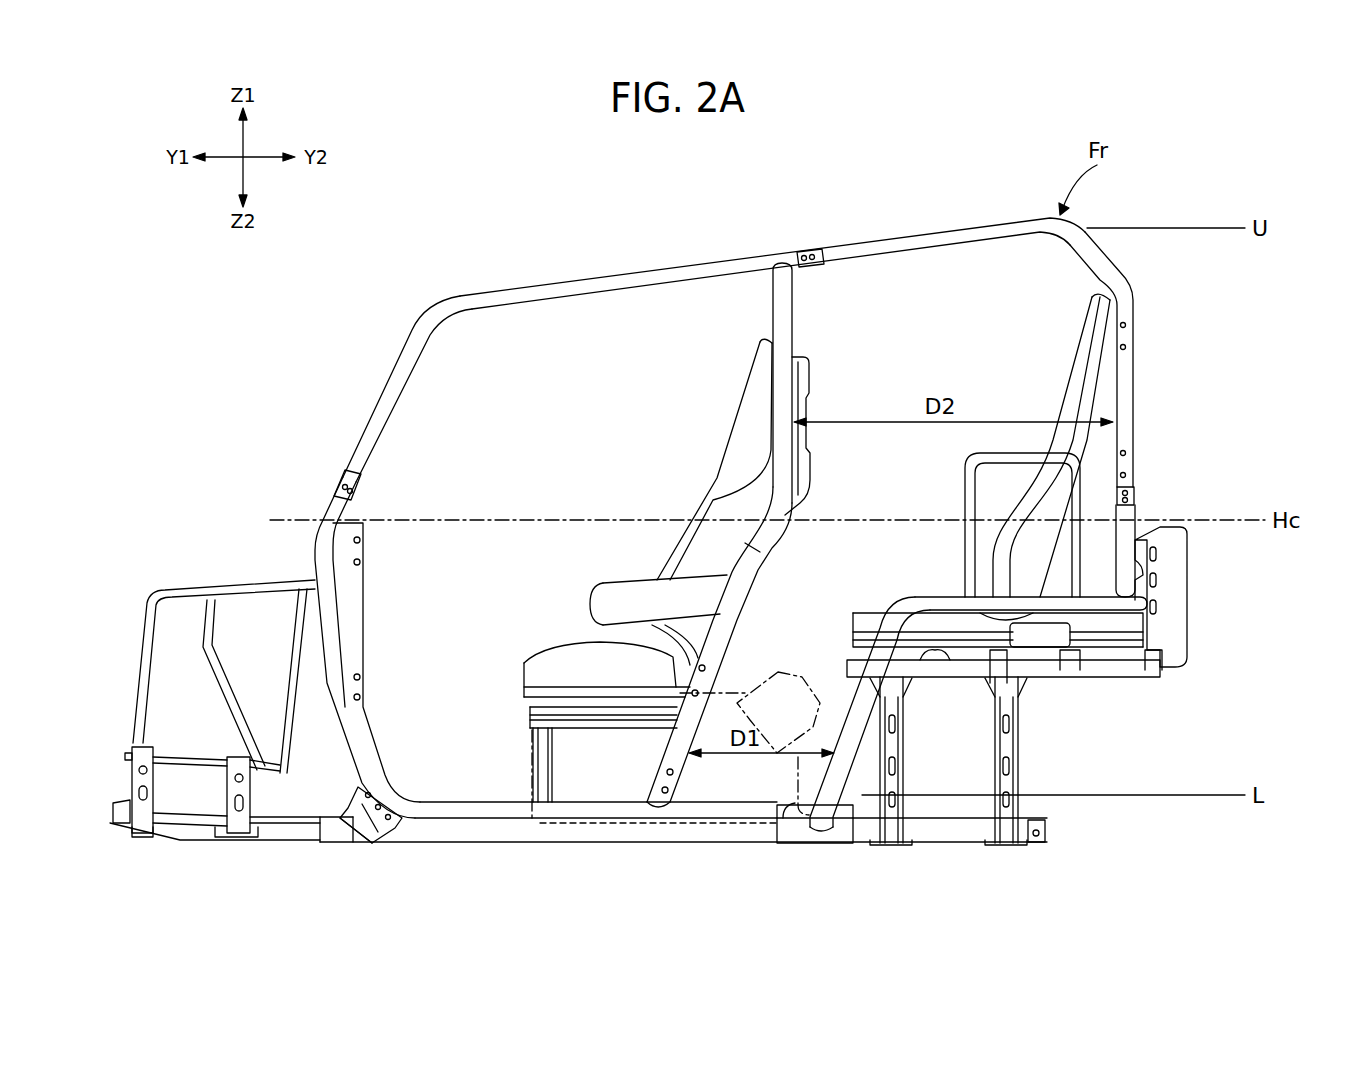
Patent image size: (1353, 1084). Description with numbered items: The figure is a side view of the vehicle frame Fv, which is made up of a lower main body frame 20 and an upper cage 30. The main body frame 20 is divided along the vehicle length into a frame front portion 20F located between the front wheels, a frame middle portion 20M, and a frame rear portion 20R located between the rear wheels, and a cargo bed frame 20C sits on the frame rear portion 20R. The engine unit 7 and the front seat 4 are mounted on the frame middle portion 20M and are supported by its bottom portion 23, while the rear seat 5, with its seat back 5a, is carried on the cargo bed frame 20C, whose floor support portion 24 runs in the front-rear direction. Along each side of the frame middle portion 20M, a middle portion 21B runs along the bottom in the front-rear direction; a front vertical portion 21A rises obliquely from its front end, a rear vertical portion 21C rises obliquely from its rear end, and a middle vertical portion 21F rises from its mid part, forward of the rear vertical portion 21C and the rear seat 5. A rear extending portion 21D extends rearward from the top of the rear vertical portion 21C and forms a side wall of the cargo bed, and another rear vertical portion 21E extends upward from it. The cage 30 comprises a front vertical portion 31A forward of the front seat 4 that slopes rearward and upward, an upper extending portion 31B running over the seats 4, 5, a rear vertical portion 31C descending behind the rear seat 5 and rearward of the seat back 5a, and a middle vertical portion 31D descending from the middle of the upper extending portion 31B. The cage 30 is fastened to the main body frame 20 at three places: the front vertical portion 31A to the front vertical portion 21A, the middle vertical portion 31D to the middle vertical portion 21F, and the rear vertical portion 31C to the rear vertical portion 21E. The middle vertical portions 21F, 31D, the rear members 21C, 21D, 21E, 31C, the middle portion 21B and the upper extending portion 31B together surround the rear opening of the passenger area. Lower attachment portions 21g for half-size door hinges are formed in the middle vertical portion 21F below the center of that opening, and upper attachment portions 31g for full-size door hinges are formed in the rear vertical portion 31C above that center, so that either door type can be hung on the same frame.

The vehicle frame Fv is at (280, 397).
The cage 30 is at (358, 430).
The front vertical portion 31A is at (415, 328).
The upper extending portion 31B is at (615, 275).
The rear vertical portion 31C is at (1135, 300).
The middle vertical portion 31D is at (794, 322).
The upper attachment portions 31g is at (1127, 325).
The main body frame 20 is at (318, 505).
The front vertical portion 21A is at (332, 637).
The middle portion 21B is at (446, 808).
The rear vertical portion 21C is at (845, 712).
The rear extending portion 21D is at (985, 600).
The rear vertical portion 21E is at (1132, 518).
The middle vertical portion 21F is at (710, 633).
The lower attachment portions 21g is at (668, 790).
The front seat 4 is at (708, 466).
The rear seat 5 is at (1052, 377).
The seat back 5a is at (1095, 333).
The engine unit 7 is at (530, 748).
The bottom portion 23 is at (600, 818).
The floor support portion 24 is at (937, 662).
The cargo bed frame 20C is at (1212, 525).
The frame front portion 20F is at (308, 870).
The frame middle portion 20M is at (805, 870).
The frame rear portion 20R is at (1043, 870).